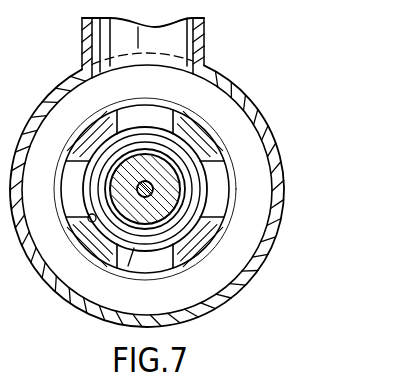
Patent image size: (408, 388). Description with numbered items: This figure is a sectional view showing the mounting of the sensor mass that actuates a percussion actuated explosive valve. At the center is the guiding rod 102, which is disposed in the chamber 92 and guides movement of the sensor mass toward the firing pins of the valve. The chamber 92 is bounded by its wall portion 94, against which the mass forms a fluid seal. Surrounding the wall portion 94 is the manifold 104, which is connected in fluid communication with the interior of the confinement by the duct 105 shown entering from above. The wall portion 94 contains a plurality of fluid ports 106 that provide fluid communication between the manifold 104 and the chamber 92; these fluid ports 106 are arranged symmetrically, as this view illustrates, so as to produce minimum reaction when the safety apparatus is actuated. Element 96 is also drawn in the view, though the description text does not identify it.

The chamber 92 is at (88, 220).
The wall portion of the chamber 94 is at (92, 126).
The key 96 is at (128, 265).
The guiding rod 102 is at (165, 176).
The manifold 104 is at (265, 263).
The duct 105 is at (208, 36).
The fluid ports 106 is at (143, 110).